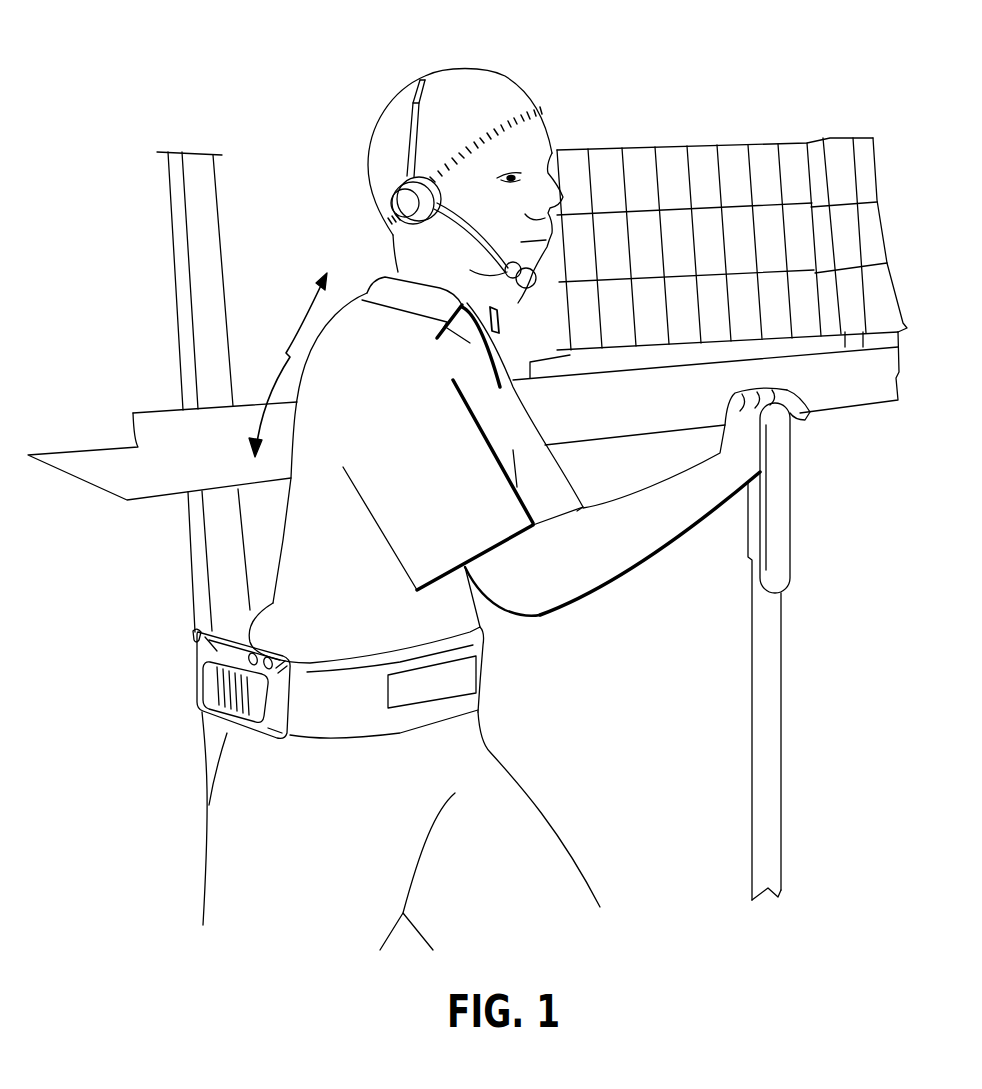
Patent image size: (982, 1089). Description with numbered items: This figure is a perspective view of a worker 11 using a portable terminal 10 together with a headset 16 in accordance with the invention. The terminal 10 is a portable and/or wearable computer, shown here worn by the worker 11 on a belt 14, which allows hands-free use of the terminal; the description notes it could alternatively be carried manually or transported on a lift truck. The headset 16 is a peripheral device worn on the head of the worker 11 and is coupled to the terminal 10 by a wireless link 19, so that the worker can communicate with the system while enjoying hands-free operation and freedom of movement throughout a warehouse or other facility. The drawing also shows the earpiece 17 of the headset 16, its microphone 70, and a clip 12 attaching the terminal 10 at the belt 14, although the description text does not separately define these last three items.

The portable terminal 10 is at (212, 724).
The worker 11 is at (419, 431).
The belt clip 12 is at (196, 636).
The belt 14 is at (480, 675).
The headset 16 is at (408, 107).
The speaker earpiece 17 is at (394, 187).
The wireless link 19 is at (283, 347).
The microphone 70 is at (507, 273).